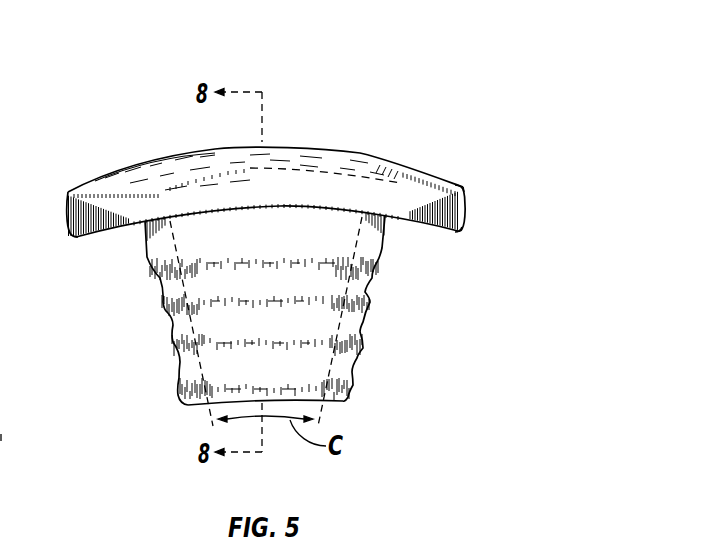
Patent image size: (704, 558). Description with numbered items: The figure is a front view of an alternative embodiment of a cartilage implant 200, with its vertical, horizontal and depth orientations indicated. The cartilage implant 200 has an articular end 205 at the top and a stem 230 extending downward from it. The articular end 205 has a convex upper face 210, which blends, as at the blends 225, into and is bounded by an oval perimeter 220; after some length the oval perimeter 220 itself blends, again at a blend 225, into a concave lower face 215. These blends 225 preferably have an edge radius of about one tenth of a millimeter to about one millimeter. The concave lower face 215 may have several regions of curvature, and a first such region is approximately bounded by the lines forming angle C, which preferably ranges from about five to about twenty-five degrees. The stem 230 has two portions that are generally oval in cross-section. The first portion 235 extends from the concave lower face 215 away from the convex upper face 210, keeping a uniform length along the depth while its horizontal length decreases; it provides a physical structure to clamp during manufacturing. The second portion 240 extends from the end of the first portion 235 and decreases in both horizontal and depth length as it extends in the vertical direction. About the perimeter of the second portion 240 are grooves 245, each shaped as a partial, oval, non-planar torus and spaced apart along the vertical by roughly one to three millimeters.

The cartilage implant 200 is at (353, 67).
The articular end 205 is at (66, 196).
The convex upper face 210 is at (362, 162).
The concave lower face 215 is at (439, 241).
The oval perimeter 220 is at (462, 208).
The blends 225 is at (466, 185).
The stem 230 is at (90, 243).
The first portion 235 is at (381, 265).
The second portion 240 is at (143, 267).
The grooves 245 is at (366, 327).